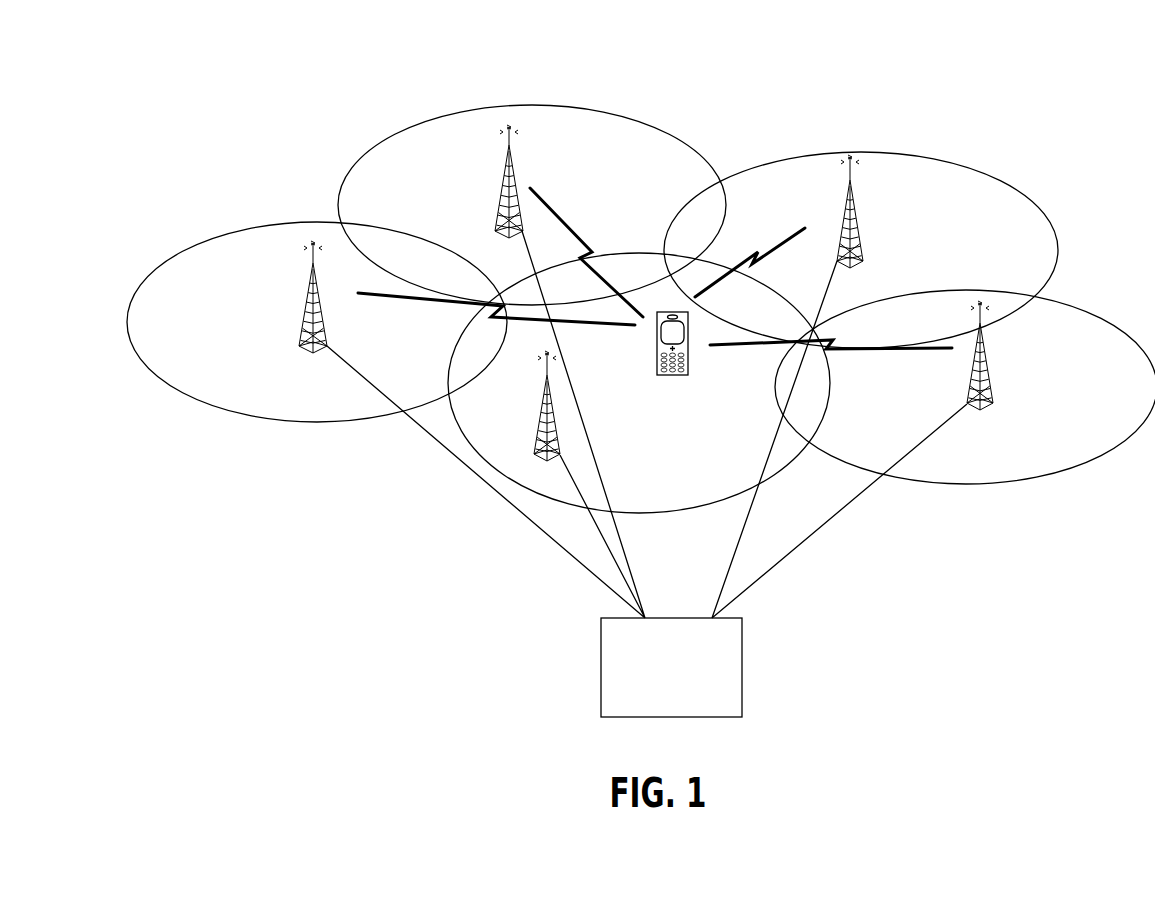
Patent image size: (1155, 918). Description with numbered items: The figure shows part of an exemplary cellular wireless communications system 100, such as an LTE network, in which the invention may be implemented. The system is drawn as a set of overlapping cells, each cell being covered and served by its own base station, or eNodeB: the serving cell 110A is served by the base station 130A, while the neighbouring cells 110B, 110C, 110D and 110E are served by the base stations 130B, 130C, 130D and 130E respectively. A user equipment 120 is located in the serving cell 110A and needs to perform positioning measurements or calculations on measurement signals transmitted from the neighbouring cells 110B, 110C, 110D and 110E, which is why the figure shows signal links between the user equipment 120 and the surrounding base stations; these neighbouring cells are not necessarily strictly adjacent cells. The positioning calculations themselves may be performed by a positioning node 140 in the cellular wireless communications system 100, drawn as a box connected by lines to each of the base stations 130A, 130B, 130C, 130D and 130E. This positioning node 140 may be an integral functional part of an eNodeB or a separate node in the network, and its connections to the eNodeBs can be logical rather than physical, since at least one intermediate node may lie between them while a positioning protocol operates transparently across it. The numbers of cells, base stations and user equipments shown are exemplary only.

The cellular wireless communications system 100 is at (300, 136).
The serving cell 110A is at (675, 520).
The neighbouring cell 110B is at (308, 430).
The neighbouring cell 110C is at (1002, 495).
The neighbouring cell 110D is at (879, 136).
The neighbouring cell 110E is at (419, 113).
The user equipment 120 is at (672, 358).
The base station (eNodeB) 130A is at (549, 418).
The base station (eNodeB) 130B is at (312, 308).
The base station (eNodeB) 130C is at (988, 371).
The base station (eNodeB) 130D is at (846, 221).
The base station (eNodeB) 130E is at (508, 194).
The positioning node 140 is at (671, 667).